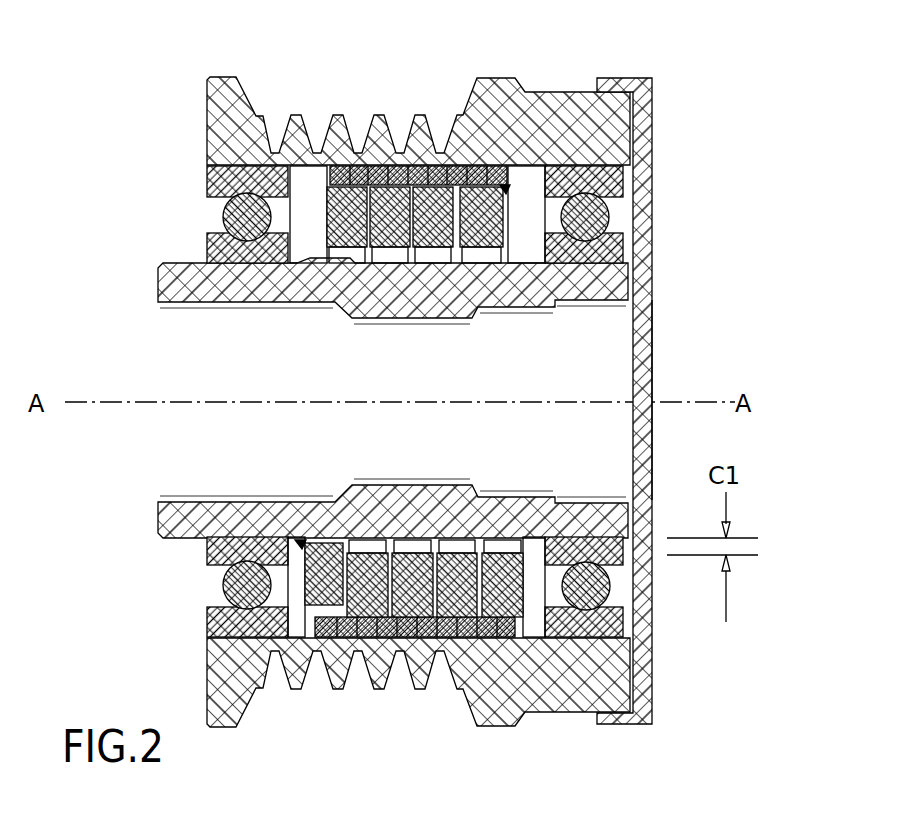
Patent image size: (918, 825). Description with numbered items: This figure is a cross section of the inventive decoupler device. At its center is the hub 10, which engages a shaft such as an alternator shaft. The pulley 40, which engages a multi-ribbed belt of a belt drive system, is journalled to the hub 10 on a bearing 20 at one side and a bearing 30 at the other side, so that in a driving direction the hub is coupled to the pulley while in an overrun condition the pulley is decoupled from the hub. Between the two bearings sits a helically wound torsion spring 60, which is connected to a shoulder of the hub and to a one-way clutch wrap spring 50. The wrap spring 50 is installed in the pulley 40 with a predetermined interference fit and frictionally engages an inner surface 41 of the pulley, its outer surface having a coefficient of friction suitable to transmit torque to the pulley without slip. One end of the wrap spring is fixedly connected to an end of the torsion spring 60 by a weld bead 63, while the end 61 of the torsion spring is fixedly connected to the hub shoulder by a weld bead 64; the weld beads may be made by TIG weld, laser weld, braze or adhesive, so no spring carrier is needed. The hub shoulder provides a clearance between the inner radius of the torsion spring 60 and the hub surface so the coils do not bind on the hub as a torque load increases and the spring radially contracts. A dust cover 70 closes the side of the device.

The hub 10 is at (168, 282).
The bearing 20 is at (207, 184).
The bearing 30 is at (607, 185).
The pulley 40 is at (563, 90).
The inner surface 41 is at (316, 167).
The one-way clutch wrap spring 50 is at (466, 643).
The torsion spring 60 is at (503, 603).
The end 61 is at (318, 580).
The weld bead 63 is at (505, 187).
The weld bead 64 is at (298, 543).
The dust cover 70 is at (652, 378).